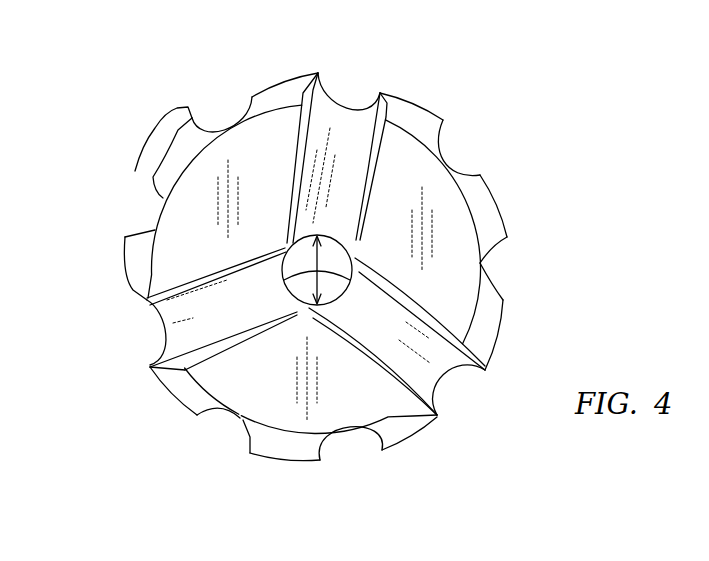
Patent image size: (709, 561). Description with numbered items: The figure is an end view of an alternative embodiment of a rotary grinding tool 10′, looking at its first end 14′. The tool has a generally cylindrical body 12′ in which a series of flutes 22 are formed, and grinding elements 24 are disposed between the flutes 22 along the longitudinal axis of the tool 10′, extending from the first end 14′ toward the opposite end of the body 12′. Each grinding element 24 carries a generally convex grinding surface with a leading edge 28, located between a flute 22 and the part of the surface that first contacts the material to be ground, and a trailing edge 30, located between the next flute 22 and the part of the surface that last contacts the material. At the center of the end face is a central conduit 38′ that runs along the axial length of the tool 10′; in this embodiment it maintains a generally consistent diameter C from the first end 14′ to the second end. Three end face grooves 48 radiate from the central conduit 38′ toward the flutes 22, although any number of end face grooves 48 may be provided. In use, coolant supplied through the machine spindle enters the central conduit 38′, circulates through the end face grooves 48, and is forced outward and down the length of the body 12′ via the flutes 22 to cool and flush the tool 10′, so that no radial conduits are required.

The rotary grinding tool 10′ is at (532, 113).
The generally cylindrical body 12′ is at (403, 173).
The first end 14′ is at (157, 400).
The flute 22 is at (320, 475).
The grinding element 24 is at (145, 128).
The leading edge 28 is at (482, 173).
The trailing edge 30 is at (508, 238).
The central conduit 38′ is at (337, 297).
The end face groove 48 is at (342, 130).
The diameter of the central conduit C is at (285, 280).